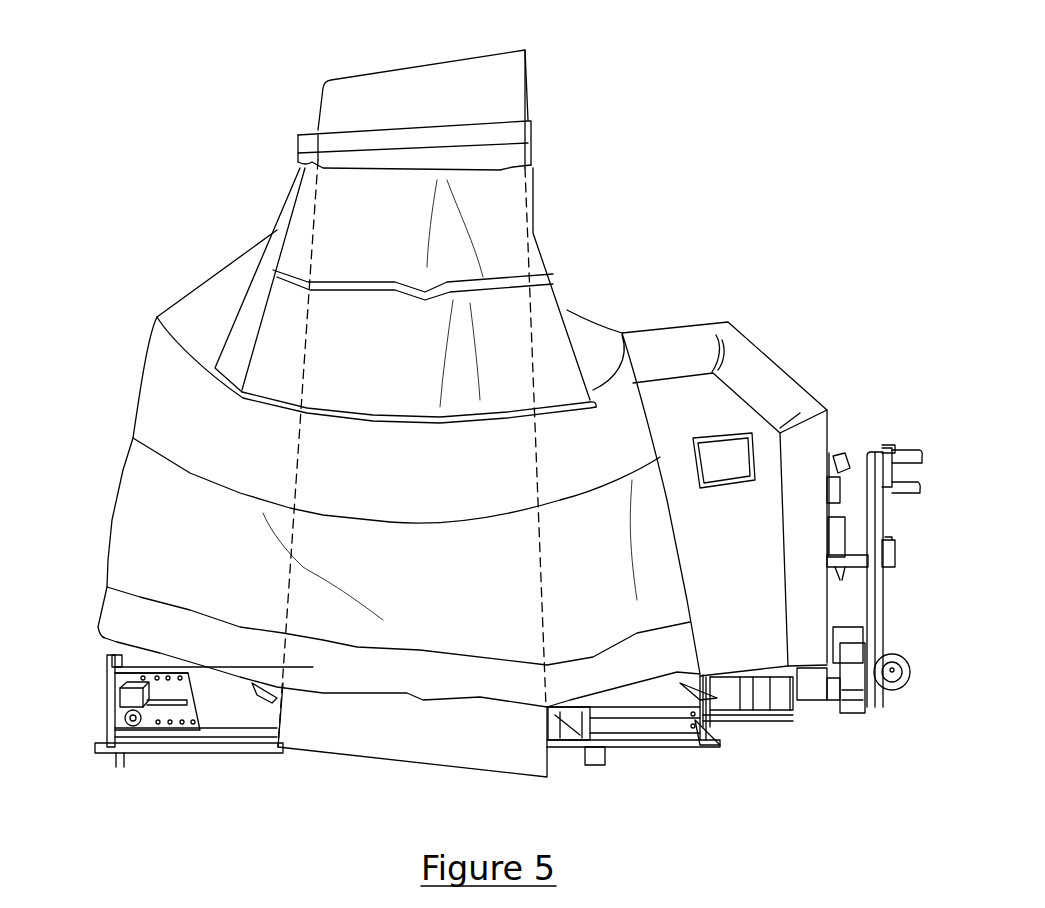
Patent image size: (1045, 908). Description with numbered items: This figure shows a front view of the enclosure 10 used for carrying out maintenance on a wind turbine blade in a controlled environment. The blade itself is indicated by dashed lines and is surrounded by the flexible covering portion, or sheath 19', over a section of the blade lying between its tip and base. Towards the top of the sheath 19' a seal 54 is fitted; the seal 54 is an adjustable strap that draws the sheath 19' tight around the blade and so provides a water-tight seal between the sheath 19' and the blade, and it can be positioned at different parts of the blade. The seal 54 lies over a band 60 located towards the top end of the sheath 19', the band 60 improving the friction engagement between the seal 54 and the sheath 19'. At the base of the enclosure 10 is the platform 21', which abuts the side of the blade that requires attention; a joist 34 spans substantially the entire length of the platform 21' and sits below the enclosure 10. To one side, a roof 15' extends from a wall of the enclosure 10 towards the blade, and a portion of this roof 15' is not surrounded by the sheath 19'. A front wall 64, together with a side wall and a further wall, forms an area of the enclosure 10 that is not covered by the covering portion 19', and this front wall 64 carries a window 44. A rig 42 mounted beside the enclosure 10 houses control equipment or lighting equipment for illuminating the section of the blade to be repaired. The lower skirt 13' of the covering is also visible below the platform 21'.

The enclosure 10 is at (657, 207).
The seal 54 is at (368, 140).
The band 60 is at (513, 158).
The sheath 19' is at (399, 453).
The roof 15' is at (724, 454).
The window 44 is at (737, 437).
The rig 42 is at (912, 453).
The front wall 64 is at (760, 648).
The platform 21' is at (374, 701).
The joist 34 is at (165, 755).
The skirt 13' is at (455, 763).